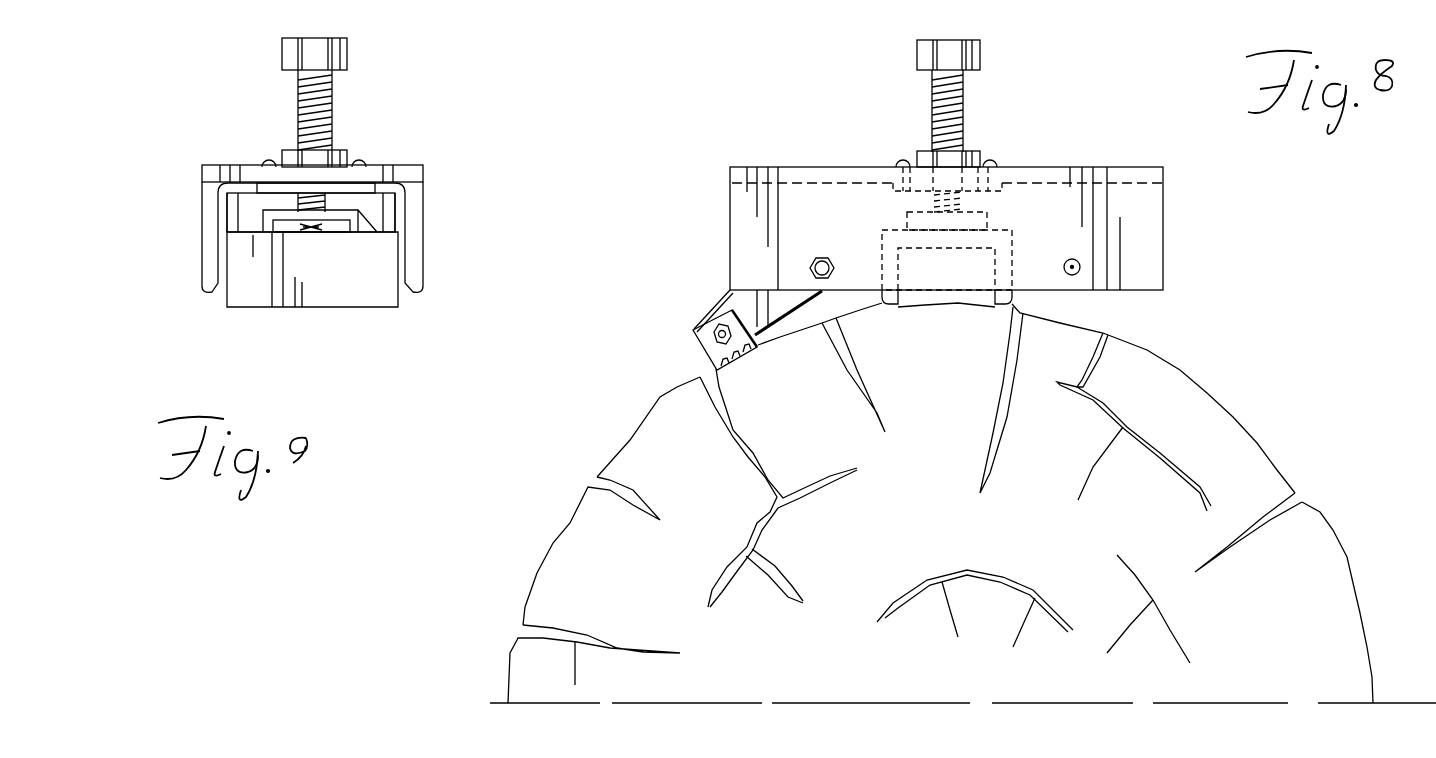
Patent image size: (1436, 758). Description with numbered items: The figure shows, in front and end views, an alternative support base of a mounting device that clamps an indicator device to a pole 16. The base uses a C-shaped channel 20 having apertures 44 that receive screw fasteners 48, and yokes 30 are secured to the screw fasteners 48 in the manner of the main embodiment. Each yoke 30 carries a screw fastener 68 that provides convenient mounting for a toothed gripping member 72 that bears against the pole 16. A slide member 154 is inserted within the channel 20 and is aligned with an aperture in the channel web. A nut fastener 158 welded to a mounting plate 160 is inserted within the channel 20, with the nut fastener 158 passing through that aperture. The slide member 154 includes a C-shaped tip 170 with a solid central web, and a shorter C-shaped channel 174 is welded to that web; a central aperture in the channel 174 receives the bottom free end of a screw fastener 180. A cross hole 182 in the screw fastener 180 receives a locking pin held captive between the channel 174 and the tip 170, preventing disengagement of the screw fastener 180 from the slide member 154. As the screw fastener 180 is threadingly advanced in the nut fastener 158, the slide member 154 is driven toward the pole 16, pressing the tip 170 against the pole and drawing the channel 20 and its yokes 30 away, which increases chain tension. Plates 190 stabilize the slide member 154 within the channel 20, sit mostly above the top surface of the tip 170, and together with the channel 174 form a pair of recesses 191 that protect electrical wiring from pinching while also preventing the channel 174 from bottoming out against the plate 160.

In FIG. 8, the pole 16 is at (1258, 457).
In FIG. 8, the C-shaped channel 20 is at (1152, 220).
In FIG. 8, the yoke 30 is at (797, 323).
In FIG. 8, the aperture 44 is at (1066, 263).
In FIG. 8, the screw fastener 48 is at (833, 256).
In FIG. 8, the screw fastener 68 is at (720, 327).
In FIG. 8, the gripping member 72 is at (713, 342).
In FIG. 8, the slide member 154 is at (1047, 213).
In FIG. 9, the nut fastener 158 is at (345, 150).
In FIG. 8, the nut fastener 158 is at (973, 163).
In FIG. 9, the mounting plate 160 is at (380, 213).
In FIG. 9, the tip 170 is at (260, 293).
In FIG. 8, the tip 170 is at (1012, 298).
In FIG. 9, the C-shaped channel 174 is at (370, 233).
In FIG. 9, the screw fastener 180 is at (330, 102).
In FIG. 8, the screw fastener 180 is at (967, 93).
In FIG. 9, the cross hole 182 is at (313, 230).
In FIG. 9, the plate 190 is at (220, 210).
In FIG. 9, the recess 191 is at (247, 212).